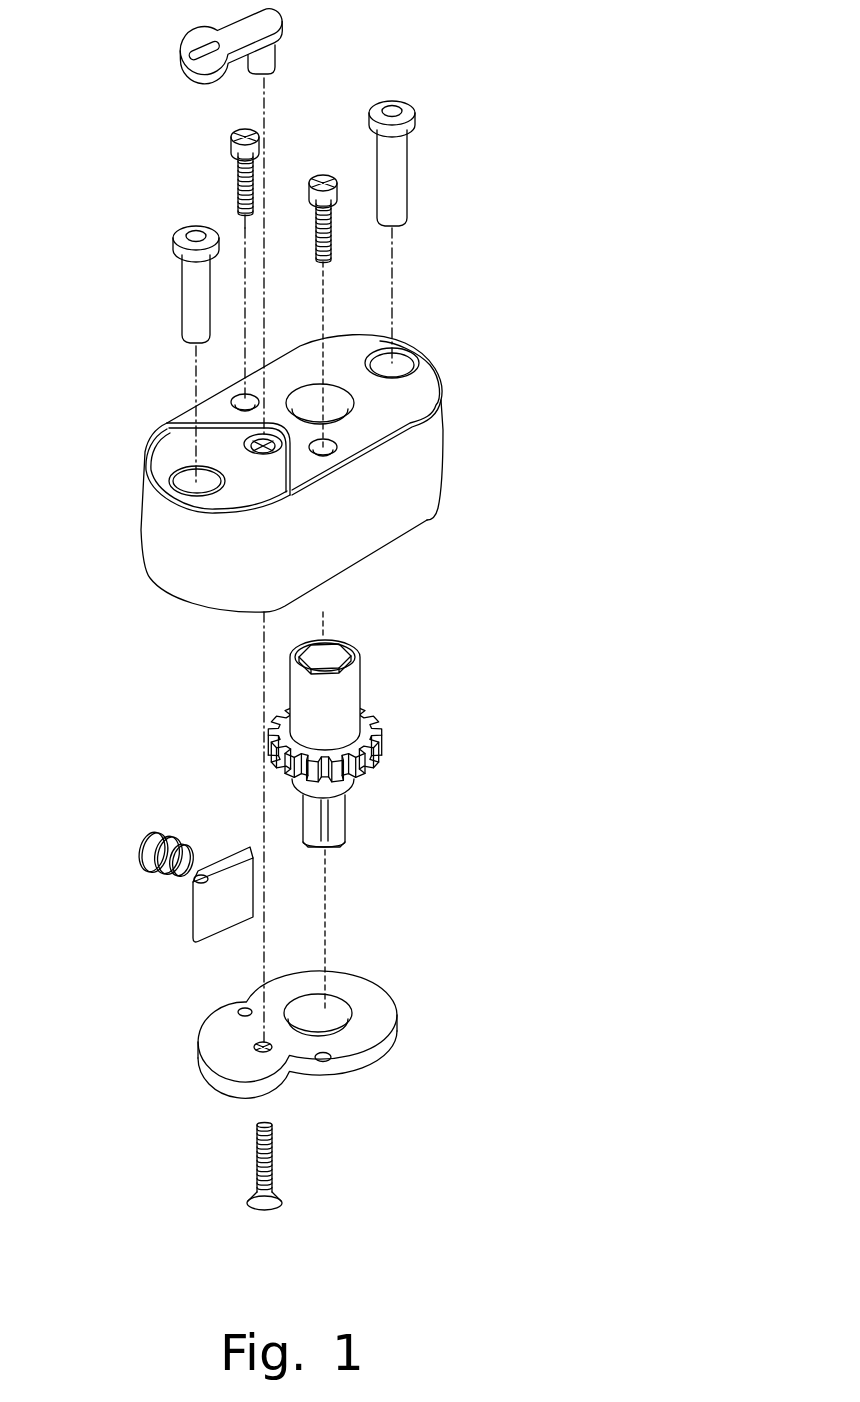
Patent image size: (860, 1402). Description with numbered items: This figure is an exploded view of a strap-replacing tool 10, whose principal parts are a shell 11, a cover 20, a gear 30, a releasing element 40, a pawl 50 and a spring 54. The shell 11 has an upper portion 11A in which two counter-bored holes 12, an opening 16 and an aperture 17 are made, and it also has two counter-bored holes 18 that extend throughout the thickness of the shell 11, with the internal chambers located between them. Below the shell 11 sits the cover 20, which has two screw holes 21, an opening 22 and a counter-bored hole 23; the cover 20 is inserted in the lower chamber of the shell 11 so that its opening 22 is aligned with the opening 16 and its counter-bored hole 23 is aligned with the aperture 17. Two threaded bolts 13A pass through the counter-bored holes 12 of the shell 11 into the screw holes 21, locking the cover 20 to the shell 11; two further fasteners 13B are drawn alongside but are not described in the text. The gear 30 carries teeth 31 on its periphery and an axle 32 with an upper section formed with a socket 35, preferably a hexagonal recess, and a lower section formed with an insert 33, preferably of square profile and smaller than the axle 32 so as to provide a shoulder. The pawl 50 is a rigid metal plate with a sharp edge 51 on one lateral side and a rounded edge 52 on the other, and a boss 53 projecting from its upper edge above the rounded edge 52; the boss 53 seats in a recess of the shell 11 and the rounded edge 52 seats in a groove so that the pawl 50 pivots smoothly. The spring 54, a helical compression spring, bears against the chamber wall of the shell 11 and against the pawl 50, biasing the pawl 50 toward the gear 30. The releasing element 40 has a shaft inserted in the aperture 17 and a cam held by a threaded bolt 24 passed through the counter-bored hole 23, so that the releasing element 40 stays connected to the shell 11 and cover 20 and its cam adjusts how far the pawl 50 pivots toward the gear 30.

The strap-replacing tool 10 is at (104, 292).
The shell 11 is at (425, 460).
The upper portion 11A is at (413, 397).
The counter-bored holes 12 is at (340, 443).
The threaded bolts 13A is at (323, 177).
The bolt 13B is at (395, 168).
The opening 16 is at (303, 400).
The aperture 17 is at (293, 447).
The counter-bored holes 18 is at (410, 358).
The cover 20 is at (222, 1060).
The screw holes 21 is at (326, 1056).
The opening 22 is at (335, 1003).
The counter-bored hole 23 is at (273, 1047).
The threaded bolt 24 is at (262, 1162).
The gear 30 is at (383, 733).
The teeth 31 is at (383, 760).
The axle 32 is at (345, 688).
The insert 33 is at (350, 813).
The socket 35 is at (340, 645).
The releasing element 40 is at (192, 45).
The pawl 50 is at (222, 923).
The sharp edge 51 is at (250, 845).
The rounded edge 52 is at (197, 925).
The boss 53 is at (195, 880).
The spring 54 is at (153, 833).